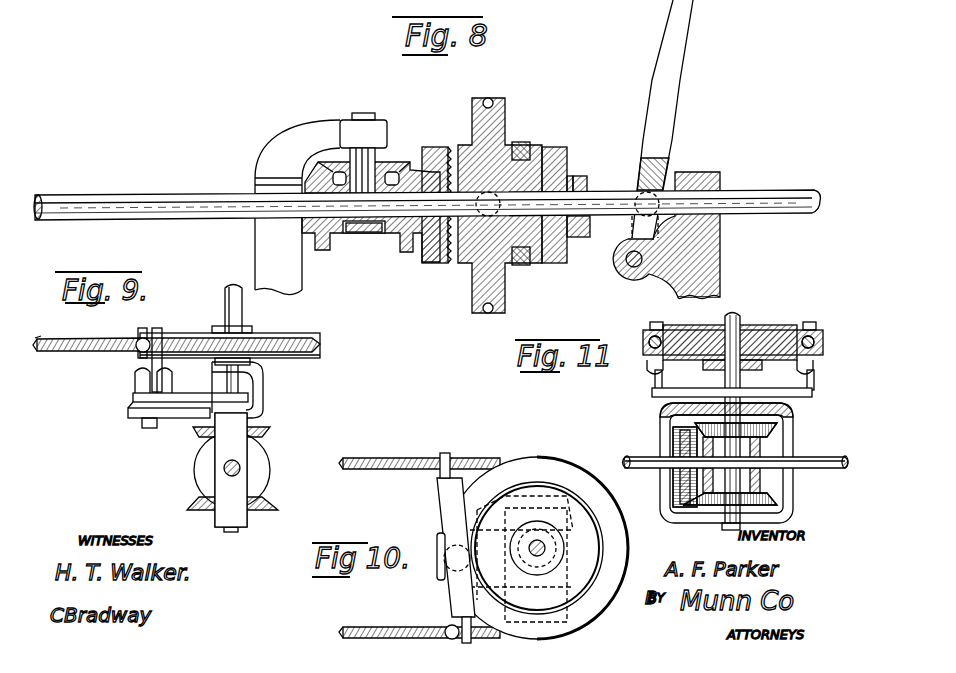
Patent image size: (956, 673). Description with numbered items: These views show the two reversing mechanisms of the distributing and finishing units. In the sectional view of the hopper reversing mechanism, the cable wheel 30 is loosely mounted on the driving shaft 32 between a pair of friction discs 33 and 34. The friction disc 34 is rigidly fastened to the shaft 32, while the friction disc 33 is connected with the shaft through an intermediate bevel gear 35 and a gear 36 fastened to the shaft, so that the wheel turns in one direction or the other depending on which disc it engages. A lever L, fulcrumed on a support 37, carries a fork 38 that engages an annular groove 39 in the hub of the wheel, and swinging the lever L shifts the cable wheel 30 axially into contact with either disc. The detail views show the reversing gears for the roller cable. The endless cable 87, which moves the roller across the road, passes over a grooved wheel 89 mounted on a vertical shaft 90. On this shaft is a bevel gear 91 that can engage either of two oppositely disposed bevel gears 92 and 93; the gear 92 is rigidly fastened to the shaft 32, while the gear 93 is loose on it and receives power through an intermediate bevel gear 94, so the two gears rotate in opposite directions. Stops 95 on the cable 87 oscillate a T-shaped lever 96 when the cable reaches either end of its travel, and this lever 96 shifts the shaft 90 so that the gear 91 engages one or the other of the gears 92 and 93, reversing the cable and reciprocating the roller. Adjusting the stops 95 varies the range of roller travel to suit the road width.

In FIG. 8, the cable wheel 30 is at (480, 272).
In FIG. 8, the driving shaft 32 is at (180, 199).
In FIG. 11, the driving shaft 32 is at (828, 468).
In FIG. 8, the friction disc 33 is at (428, 153).
In FIG. 8, the friction disc 34 is at (555, 155).
In FIG. 8, the intermediate bevel gear 35 is at (321, 162).
In FIG. 8, the gear 36 is at (371, 218).
In FIG. 8, the support 37 is at (648, 276).
In FIG. 8, the fork 38 is at (503, 112).
In FIG. 8, the annular groove 39 is at (524, 258).
In FIG. 9, the endless cable 87 is at (88, 352).
In FIG. 10, the endless cable 87 is at (407, 466).
In FIG. 11, the endless cable 87 is at (814, 343).
In FIG. 9, the grooved wheel 89 is at (240, 349).
In FIG. 10, the grooved wheel 89 is at (612, 565).
In FIG. 11, the grooved wheel 89 is at (733, 340).
In FIG. 9, the vertical shaft 90 is at (236, 305).
In FIG. 10, the vertical shaft 90 is at (540, 542).
In FIG. 11, the vertical shaft 90 is at (742, 328).
In FIG. 9, the bevel gear 91 is at (256, 447).
In FIG. 11, the bevel gear 91 is at (778, 428).
In FIG. 9, the bevel gear 92 is at (262, 468).
In FIG. 11, the bevel gear 92 is at (680, 448).
In FIG. 11, the bevel gear 93 is at (774, 440).
In FIG. 11, the intermediate bevel gear 94 is at (706, 503).
In FIG. 9, the stops 95 is at (138, 352).
In FIG. 10, the stops 95 is at (447, 627).
In FIG. 9, the T-shaped lever 96 is at (186, 400).
In FIG. 10, the T-shaped lever 96 is at (448, 605).
In FIG. 11, the T-shaped lever 96 is at (668, 392).
In FIG. 8, the lever L is at (670, 91).